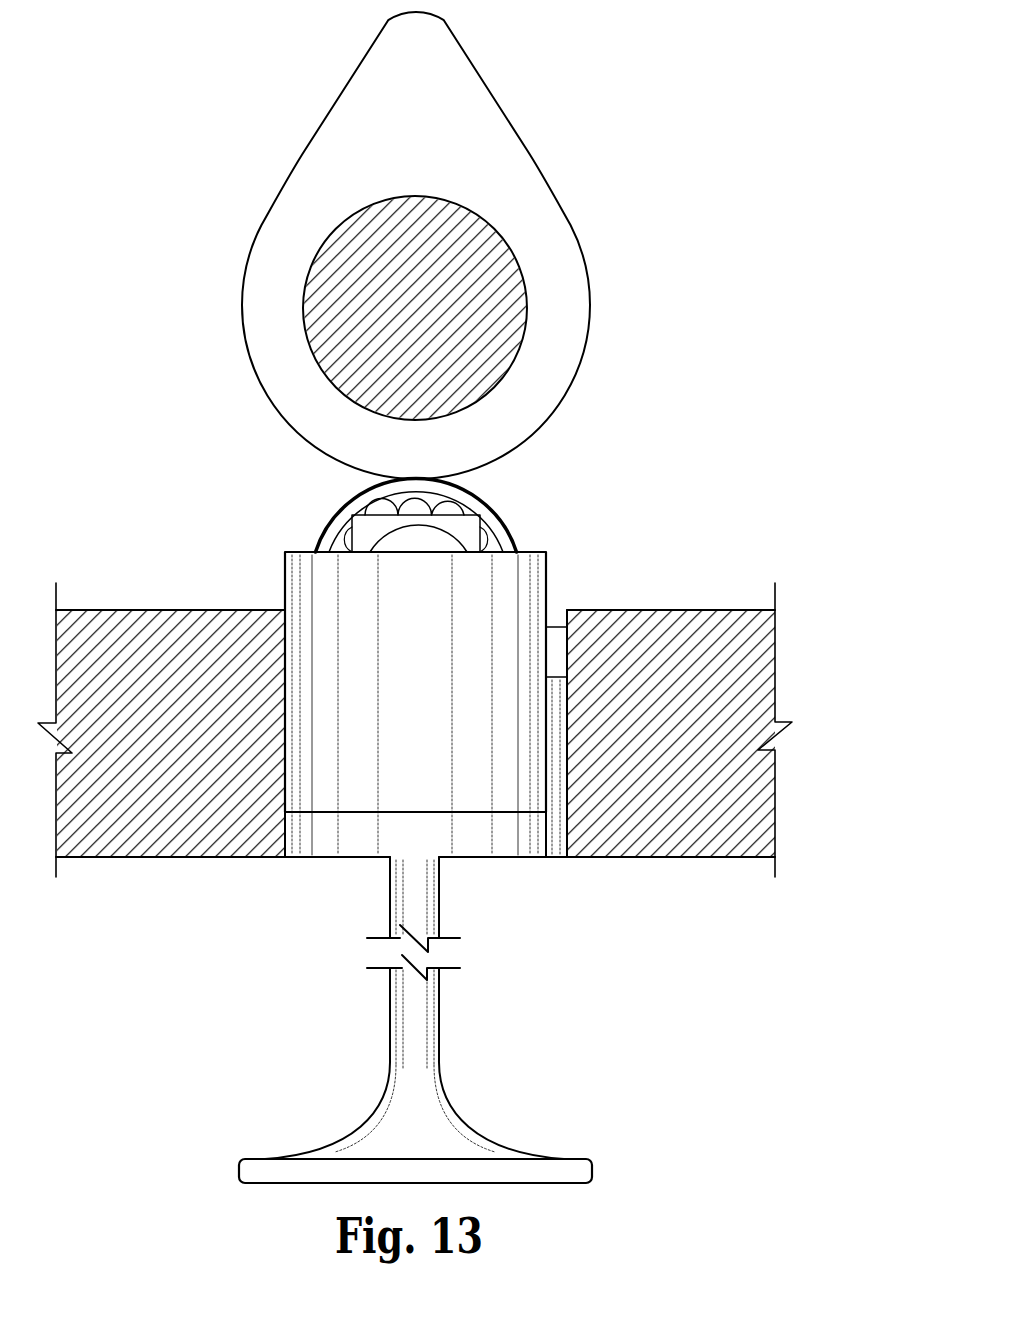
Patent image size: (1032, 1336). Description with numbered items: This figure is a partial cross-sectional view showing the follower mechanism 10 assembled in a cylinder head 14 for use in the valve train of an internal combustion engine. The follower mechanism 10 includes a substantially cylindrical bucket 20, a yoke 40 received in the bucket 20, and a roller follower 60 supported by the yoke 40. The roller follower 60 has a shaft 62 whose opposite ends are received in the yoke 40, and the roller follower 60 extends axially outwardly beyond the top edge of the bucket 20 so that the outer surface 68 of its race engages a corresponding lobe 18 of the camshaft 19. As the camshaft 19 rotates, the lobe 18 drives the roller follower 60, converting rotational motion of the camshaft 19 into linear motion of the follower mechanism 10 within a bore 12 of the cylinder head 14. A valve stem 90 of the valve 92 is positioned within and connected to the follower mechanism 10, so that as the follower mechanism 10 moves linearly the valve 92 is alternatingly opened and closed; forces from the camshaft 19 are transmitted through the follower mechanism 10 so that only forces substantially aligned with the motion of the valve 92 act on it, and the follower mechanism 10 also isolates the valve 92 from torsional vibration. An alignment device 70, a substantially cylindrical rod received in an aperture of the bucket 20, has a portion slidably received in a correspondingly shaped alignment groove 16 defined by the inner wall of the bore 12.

The follower mechanism 10 is at (605, 531).
The bore 12 is at (287, 837).
The cylinder head 14 is at (188, 740).
The alignment groove 16 is at (567, 821).
The lobe 18 is at (423, 152).
The camshaft 19 is at (432, 318).
The bucket 20 is at (429, 683).
The yoke 40 is at (363, 535).
The roller follower 60 is at (345, 491).
The shaft 62 is at (420, 543).
The outer surface 68 is at (481, 508).
The alignment device 70 is at (556, 625).
The valve stem 90 is at (440, 918).
The valve 92 is at (562, 1160).